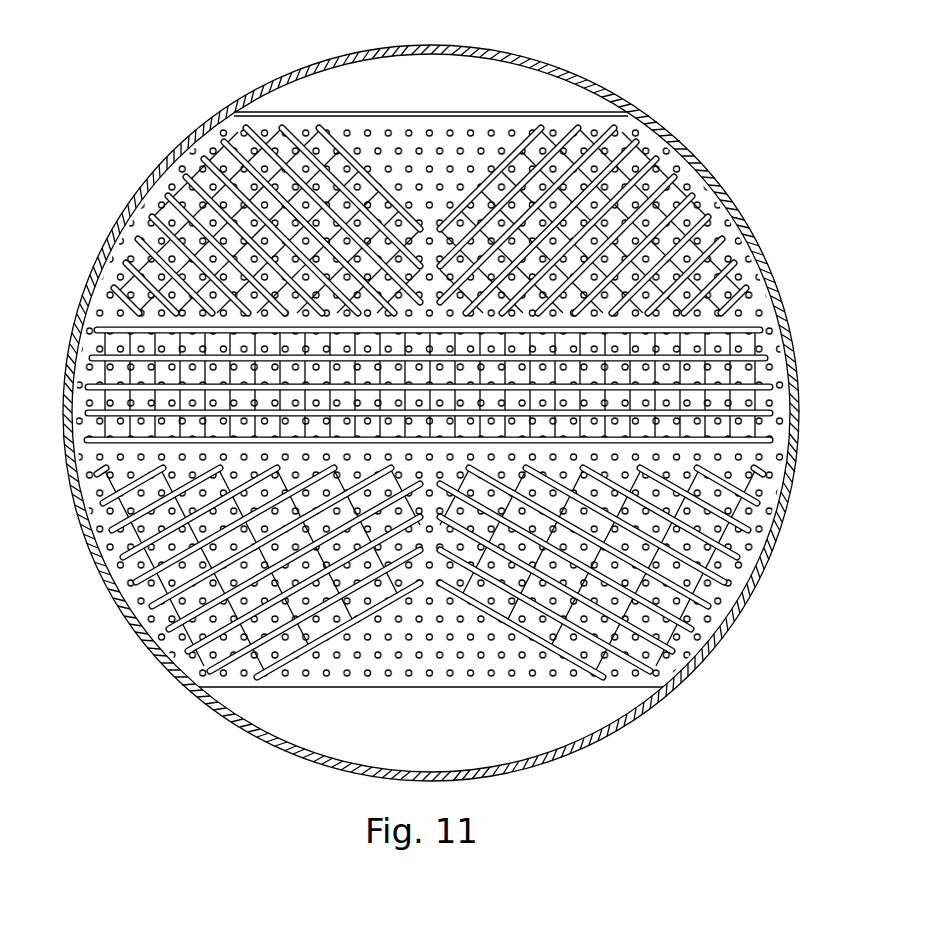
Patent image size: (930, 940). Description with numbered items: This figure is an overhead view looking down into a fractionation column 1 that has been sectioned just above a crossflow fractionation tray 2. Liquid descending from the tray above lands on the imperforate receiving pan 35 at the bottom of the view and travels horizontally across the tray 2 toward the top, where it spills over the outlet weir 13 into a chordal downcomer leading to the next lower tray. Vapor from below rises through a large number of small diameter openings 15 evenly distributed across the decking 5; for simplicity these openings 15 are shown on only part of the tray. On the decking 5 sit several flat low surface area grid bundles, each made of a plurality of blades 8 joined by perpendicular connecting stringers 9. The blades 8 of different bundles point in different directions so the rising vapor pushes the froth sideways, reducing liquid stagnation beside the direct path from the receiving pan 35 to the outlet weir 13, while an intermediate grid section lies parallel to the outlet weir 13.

The fractionation column 1 is at (691, 143).
The crossflow fractionation tray 2 is at (772, 423).
The decking 5 is at (419, 180).
The blades 8 is at (248, 145).
The stringers 9 is at (243, 203).
The outlet weir 13 is at (488, 113).
The openings 15 is at (583, 690).
The imperforate receiving pan 35 is at (440, 737).